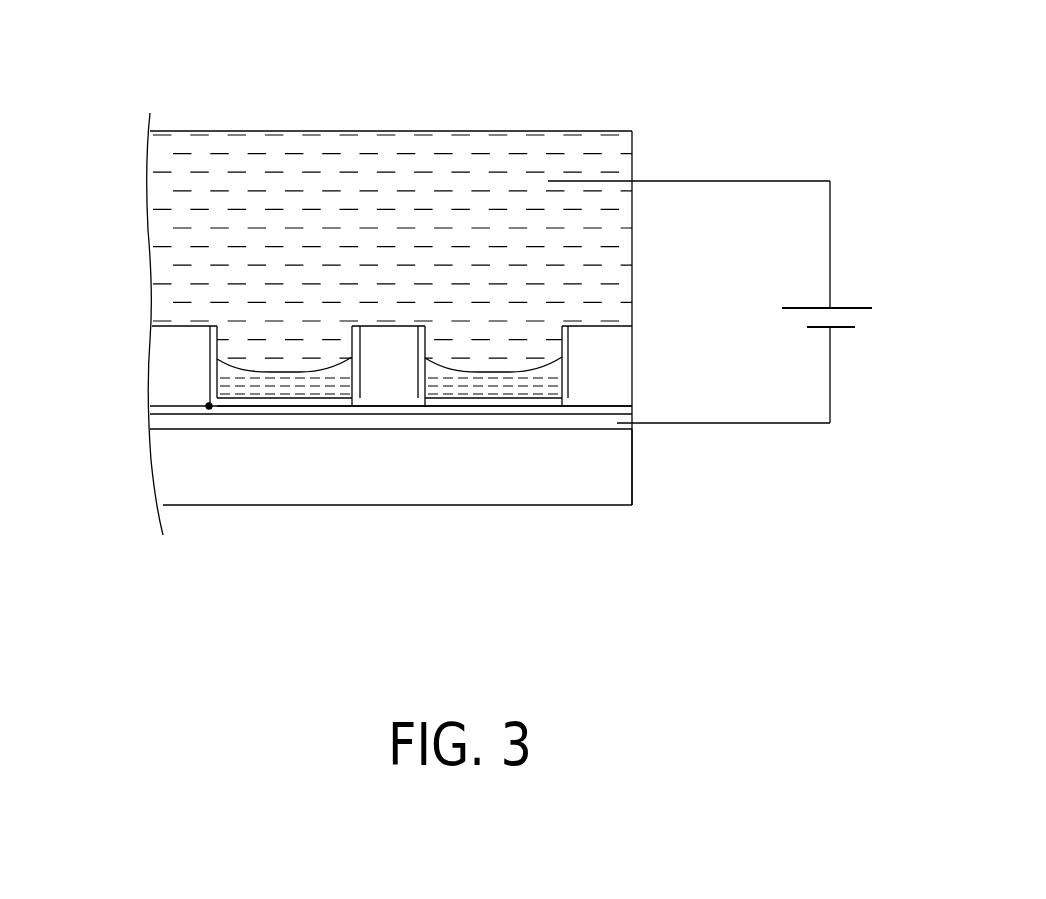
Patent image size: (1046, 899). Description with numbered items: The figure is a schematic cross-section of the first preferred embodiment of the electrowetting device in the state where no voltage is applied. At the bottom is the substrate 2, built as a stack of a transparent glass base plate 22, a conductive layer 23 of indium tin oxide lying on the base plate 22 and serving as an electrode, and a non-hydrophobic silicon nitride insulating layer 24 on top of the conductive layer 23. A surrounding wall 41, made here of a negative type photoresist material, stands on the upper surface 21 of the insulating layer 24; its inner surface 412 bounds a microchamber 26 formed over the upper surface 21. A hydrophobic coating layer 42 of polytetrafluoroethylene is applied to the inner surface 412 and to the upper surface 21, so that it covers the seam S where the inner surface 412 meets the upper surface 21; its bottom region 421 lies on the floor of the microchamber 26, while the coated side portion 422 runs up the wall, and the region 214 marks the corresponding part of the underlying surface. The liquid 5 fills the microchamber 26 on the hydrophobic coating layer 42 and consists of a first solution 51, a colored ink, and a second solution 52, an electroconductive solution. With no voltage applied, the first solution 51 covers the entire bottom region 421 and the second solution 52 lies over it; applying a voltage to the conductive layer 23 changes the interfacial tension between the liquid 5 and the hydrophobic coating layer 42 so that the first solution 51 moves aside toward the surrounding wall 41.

The substrate 2 is at (766, 470).
The liquid 5 is at (252, 373).
The upper surface 21 is at (590, 402).
The base plate 22 is at (618, 478).
The conductive layer 23 is at (595, 423).
The insulating layer 24 is at (615, 408).
The microchamber 26 is at (227, 353).
The surrounding wall 41 is at (183, 360).
The hydrophobic coating layer 42 is at (213, 388).
The first solution 51 is at (261, 384).
The second solution 52 is at (193, 257).
The pixel region surface 214 is at (543, 405).
The inner surface 412 is at (214, 366).
The bottom region 421 is at (494, 398).
The side portion of hydrophobic layer 422 is at (423, 367).
The seam S is at (209, 407).